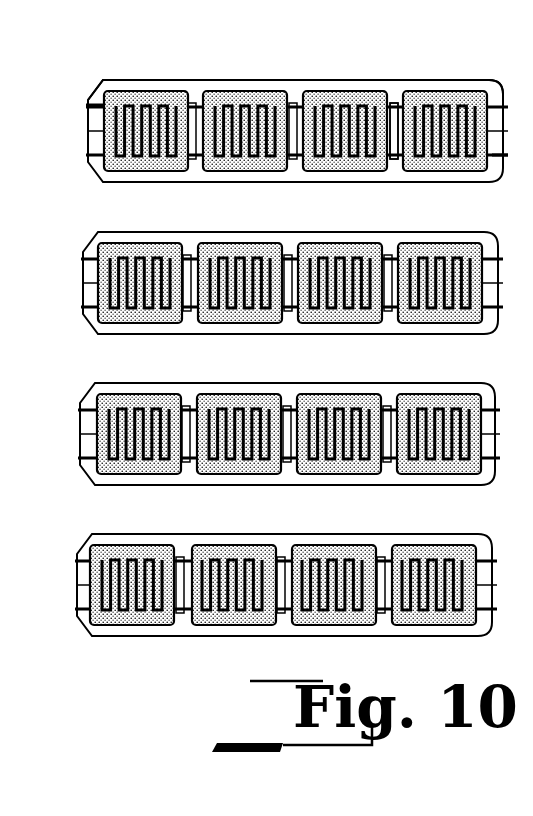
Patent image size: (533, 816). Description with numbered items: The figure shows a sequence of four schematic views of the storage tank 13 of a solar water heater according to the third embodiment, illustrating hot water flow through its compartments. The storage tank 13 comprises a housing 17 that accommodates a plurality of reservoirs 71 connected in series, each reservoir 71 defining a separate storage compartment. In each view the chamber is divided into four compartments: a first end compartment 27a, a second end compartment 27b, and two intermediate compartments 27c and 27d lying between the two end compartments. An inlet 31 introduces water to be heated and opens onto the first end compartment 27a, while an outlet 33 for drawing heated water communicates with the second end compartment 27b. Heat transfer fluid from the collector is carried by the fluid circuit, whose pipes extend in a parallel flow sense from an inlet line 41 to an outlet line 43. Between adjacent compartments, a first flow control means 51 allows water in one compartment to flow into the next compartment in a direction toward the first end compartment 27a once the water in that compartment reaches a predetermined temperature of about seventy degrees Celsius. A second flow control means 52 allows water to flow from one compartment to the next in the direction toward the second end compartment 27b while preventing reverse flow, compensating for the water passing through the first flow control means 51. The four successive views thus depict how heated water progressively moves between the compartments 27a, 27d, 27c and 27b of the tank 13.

The storage tank 13 is at (110, 85).
The housing 17 is at (218, 80).
The reservoir 71 is at (118, 97).
The first flow control means 51 is at (393, 105).
The inlet line 41 is at (497, 88).
The outlet line 43 is at (90, 105).
The inlet 31 is at (90, 128).
The first end compartment 27a is at (104, 175).
The second end compartment 27b is at (425, 172).
The intermediate compartment 27c is at (320, 172).
The intermediate compartment 27d is at (235, 172).
The second flow control means 52 is at (398, 150).
The outlet 33 is at (500, 152).